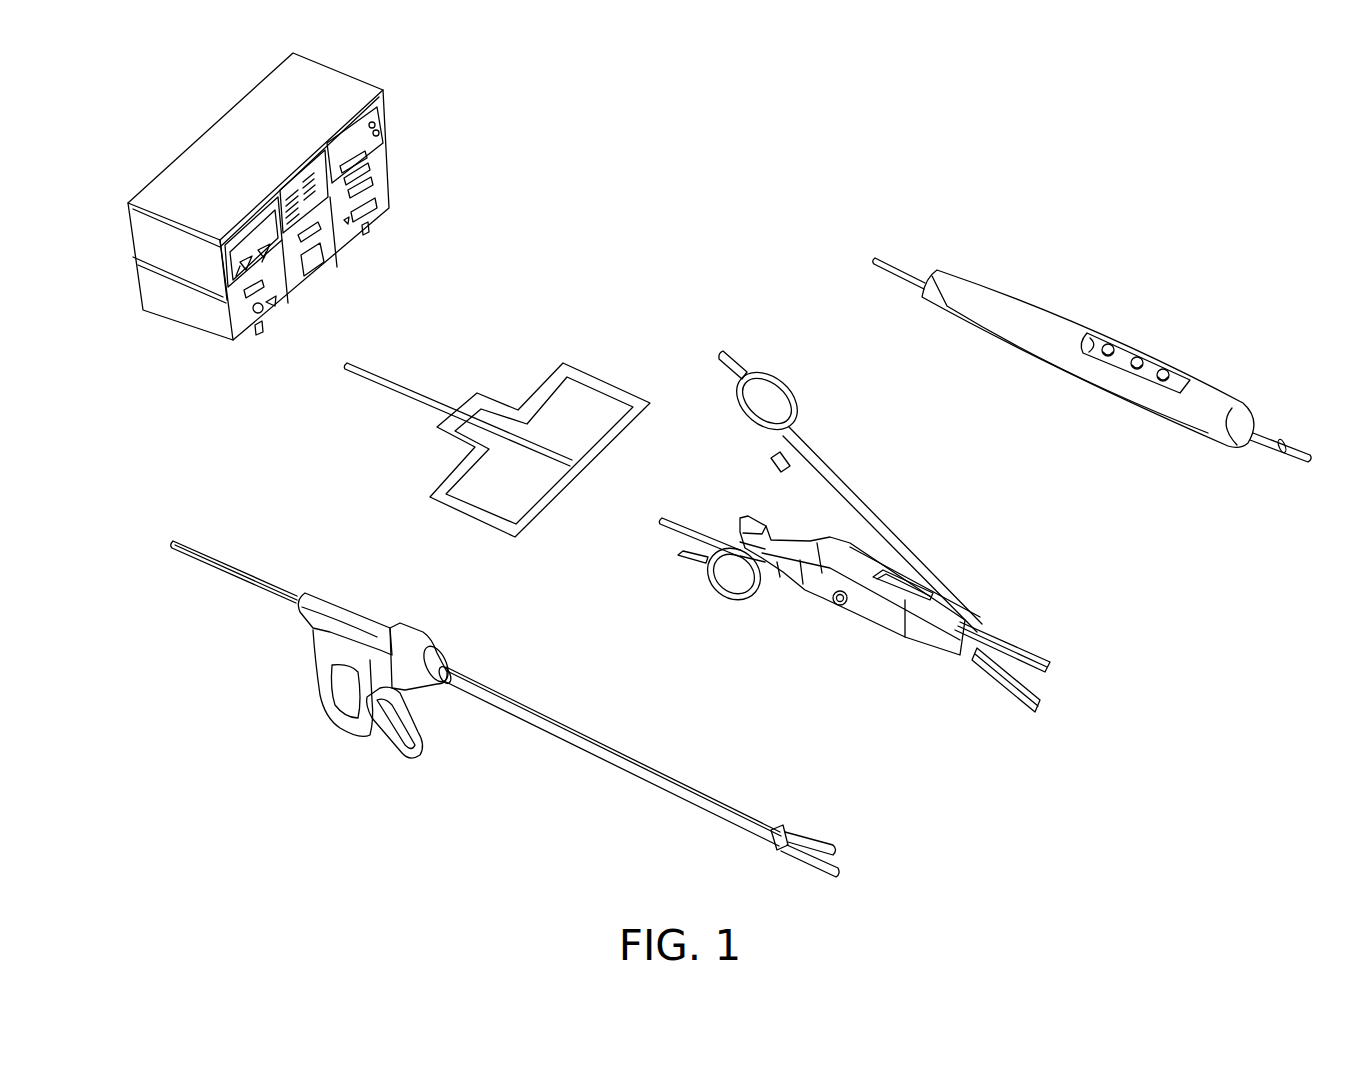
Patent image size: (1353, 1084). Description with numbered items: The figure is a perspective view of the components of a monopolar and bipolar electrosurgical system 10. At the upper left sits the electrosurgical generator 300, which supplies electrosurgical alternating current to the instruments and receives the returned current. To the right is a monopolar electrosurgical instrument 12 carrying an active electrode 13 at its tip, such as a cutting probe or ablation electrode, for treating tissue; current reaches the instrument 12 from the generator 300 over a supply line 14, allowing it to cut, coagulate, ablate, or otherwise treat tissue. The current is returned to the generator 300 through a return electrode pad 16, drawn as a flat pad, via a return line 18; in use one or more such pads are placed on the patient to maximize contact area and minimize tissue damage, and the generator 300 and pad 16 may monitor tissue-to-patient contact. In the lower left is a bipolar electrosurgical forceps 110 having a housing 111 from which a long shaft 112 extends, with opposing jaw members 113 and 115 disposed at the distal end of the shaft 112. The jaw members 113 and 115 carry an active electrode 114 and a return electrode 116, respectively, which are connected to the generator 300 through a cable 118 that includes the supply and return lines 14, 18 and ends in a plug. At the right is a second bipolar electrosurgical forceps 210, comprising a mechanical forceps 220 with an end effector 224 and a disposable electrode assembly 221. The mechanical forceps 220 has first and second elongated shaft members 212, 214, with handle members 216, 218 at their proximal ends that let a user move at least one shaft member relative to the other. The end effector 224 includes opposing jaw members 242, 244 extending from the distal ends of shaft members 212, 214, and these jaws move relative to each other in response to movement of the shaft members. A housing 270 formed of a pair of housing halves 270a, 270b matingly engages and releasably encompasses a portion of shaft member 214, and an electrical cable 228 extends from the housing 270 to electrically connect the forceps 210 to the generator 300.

The electrosurgical system 10 is at (718, 106).
The monopolar electrosurgical instrument 12 is at (1160, 306).
The active electrode 13 is at (1300, 436).
The supply line 14 is at (893, 258).
The return electrode pad 16 is at (478, 525).
The return line 18 is at (395, 378).
The bipolar electrosurgical forceps 110 is at (511, 807).
The housing 111 is at (335, 598).
The shaft 112 is at (553, 717).
The jaw member 113 is at (810, 838).
The active electrode 114 is at (842, 853).
The jaw member 115 is at (815, 870).
The return electrode 116 is at (846, 872).
The cable 118 is at (258, 580).
The bipolar electrosurgical forceps 210 is at (975, 493).
The first elongated shaft member 212 is at (848, 495).
The second elongated shaft member 214 is at (813, 603).
The handle member 216 is at (780, 378).
The handle member 218 is at (712, 594).
The mechanical forceps 220 is at (873, 513).
The disposable electrode assembly 221 is at (1052, 700).
The end effector 224 is at (1062, 681).
The electrical cable 228 is at (672, 518).
The jaw member 242 is at (995, 682).
The jaw member 244 is at (1015, 645).
The housing 270 is at (770, 505).
The housing half 270a is at (870, 603).
The housing half 270b is at (908, 562).
The electrosurgical generator 300 is at (170, 126).